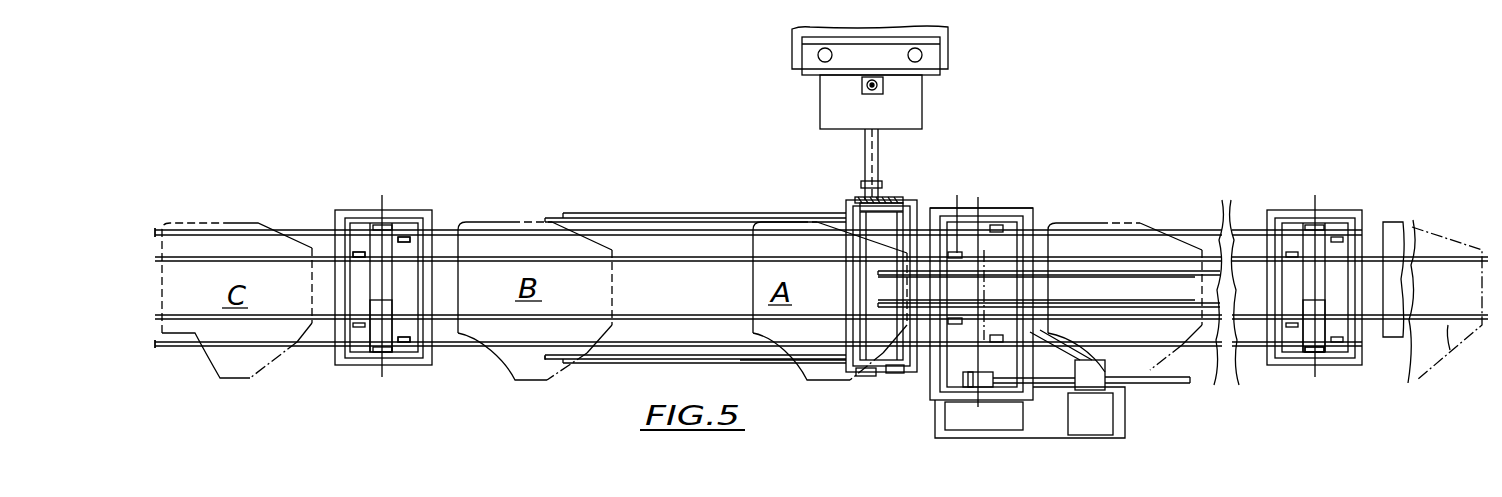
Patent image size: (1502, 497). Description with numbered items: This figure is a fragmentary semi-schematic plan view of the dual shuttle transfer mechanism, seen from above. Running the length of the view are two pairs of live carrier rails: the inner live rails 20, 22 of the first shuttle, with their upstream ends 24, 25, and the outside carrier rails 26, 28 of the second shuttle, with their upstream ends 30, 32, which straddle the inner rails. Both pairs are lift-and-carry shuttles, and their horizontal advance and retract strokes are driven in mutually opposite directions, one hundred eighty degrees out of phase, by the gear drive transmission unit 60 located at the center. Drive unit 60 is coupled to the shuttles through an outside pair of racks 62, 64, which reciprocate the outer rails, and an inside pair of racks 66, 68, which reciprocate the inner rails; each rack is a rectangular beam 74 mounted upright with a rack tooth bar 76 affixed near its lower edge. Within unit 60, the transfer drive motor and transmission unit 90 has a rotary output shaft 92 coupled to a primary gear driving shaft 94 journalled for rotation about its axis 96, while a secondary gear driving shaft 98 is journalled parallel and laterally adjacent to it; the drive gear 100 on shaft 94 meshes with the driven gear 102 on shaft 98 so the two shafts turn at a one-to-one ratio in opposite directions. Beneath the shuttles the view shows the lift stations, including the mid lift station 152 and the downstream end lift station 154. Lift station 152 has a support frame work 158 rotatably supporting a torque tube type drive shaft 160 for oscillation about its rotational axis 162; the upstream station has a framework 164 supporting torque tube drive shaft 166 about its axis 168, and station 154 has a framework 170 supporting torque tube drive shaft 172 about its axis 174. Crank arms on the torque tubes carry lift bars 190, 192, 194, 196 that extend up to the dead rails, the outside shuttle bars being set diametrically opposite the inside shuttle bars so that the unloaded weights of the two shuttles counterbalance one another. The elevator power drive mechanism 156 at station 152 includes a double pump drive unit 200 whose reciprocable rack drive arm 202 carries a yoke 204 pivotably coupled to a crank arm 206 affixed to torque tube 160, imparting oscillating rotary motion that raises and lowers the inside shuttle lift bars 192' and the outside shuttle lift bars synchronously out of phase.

The live rail 20 is at (553, 263).
The live rail 22 is at (637, 315).
The upstream end 24 is at (357, 257).
The upstream end 25 is at (336, 320).
The outside carrier rail 26 is at (297, 348).
The outside carrier rail 28 is at (298, 229).
The upstream end 30 is at (157, 344).
The upstream end 32 is at (160, 230).
The gear drive transmission unit 60 is at (919, 192).
The rack 62 is at (742, 366).
The rack 64 is at (706, 213).
The rack 66 is at (1118, 300).
The rack 68 is at (1083, 268).
The rectangular beam 74 is at (560, 364).
The rack tooth bar 76 is at (640, 364).
The transfer drive motor and transmission unit 90 is at (950, 47).
The rotary output shaft 92 is at (865, 148).
The primary gear driving shaft 94 is at (862, 185).
The rotational axis 96 is at (868, 376).
The secondary gear driving shaft 98 is at (897, 370).
The drive gear 100 is at (856, 200).
The driven gear 102 is at (893, 197).
The lift station 152 is at (1032, 207).
The lift station 154 is at (1363, 207).
The elevator power drive mechanism 156 is at (1092, 440).
The support frame work 158 is at (992, 210).
The torque tube type drive shaft 160 is at (968, 382).
The rotational axis 162 is at (982, 405).
The framework 164 is at (413, 212).
The torque tube type drive shaft 166 is at (374, 337).
The rotational axis 168 is at (383, 208).
The framework 170 is at (1287, 222).
The torque tube type drive shaft 172 is at (1303, 300).
The rotational axis 174 is at (1313, 373).
The lift bar 190 is at (408, 244).
The lift bar 192 is at (362, 203).
The inside shuttle lift bar 192' is at (959, 213).
The lift bar 194 is at (952, 323).
The lift bar 196 is at (412, 338).
The double pump drive unit 200 is at (1112, 422).
The rack drive arm 202 is at (1190, 384).
The yoke 204 is at (993, 385).
The crank arm 206 is at (977, 382).